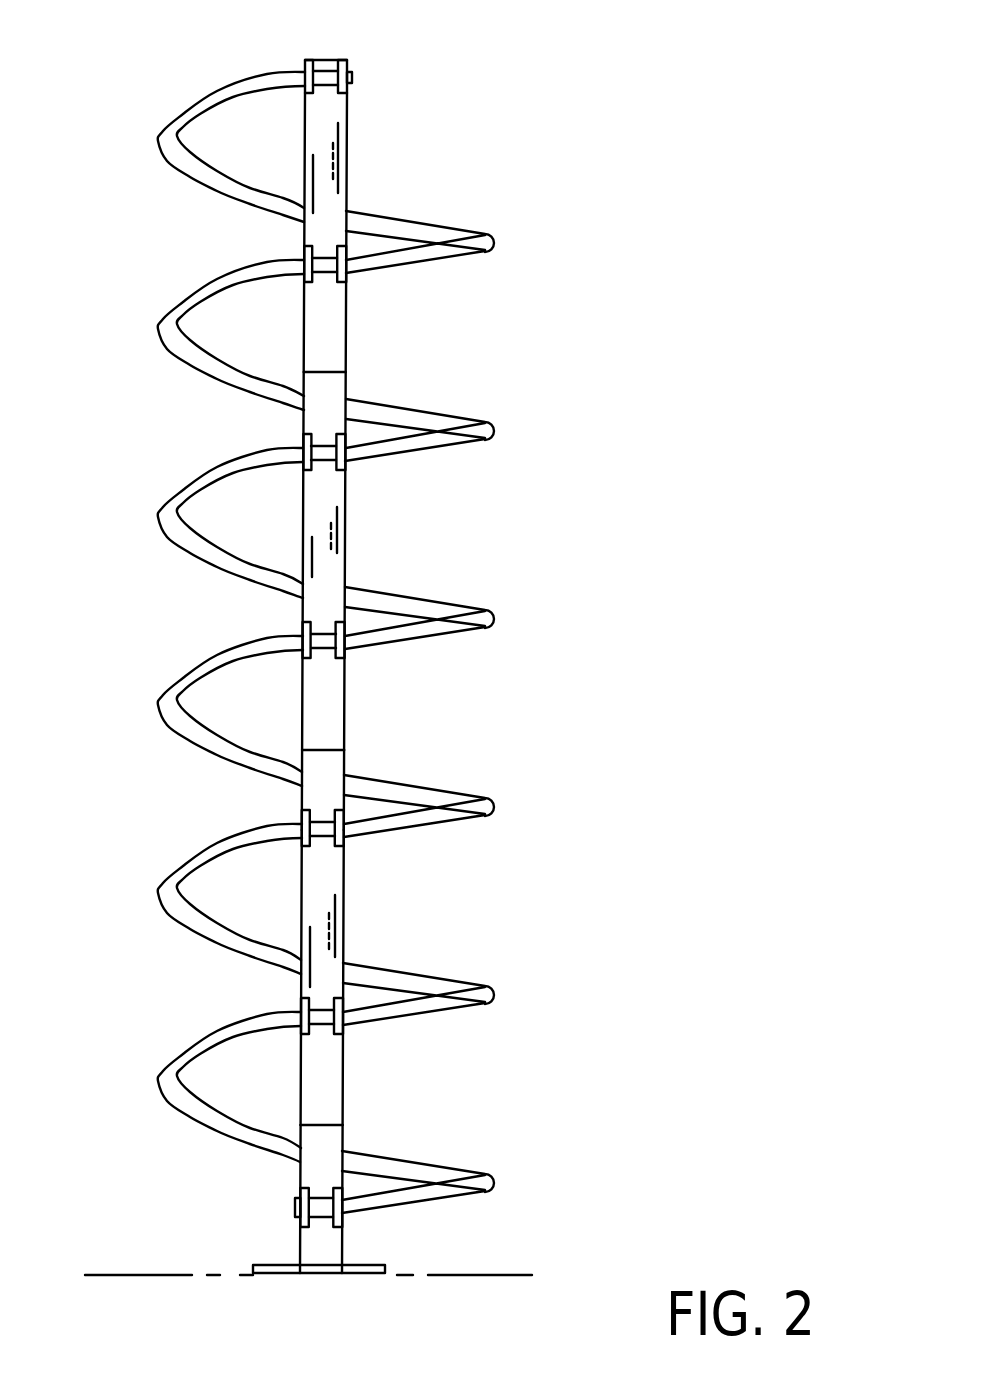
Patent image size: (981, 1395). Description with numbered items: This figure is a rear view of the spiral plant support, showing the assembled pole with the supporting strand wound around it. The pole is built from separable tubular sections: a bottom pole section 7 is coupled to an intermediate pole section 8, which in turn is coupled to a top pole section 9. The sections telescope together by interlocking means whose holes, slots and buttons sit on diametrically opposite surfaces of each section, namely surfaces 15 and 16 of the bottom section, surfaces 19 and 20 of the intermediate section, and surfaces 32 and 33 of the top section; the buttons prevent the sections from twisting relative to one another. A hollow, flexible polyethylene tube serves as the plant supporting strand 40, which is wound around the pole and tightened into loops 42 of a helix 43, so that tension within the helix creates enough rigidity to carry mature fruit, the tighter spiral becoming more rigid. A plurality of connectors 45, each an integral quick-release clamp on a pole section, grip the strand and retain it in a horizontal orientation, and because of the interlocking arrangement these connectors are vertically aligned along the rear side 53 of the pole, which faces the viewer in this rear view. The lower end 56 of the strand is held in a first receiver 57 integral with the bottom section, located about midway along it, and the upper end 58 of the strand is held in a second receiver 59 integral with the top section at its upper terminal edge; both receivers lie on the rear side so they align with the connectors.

The bottom pole section 7 is at (300, 1173).
The intermediate pole section 8 is at (346, 537).
The top pole section 9 is at (348, 183).
The surface of bottom pole section 15 is at (300, 1139).
The surface of bottom pole section 16 is at (342, 1128).
The surface of intermediate pole section 19 is at (302, 772).
The surface of intermediate pole section 20 is at (345, 753).
The surface of top pole section 32 is at (304, 153).
The surface of top pole section 33 is at (348, 125).
The plant supporting strand 40 is at (465, 602).
The loops 42 is at (497, 237).
The helix 43 is at (497, 425).
The connectors 45 is at (304, 285).
The rear side of pole 53 is at (303, 566).
The lower end of strand 56 is at (295, 1202).
The first receiver 57 is at (342, 1222).
The upper end of strand 58 is at (350, 73).
The second receiver 59 is at (303, 58).